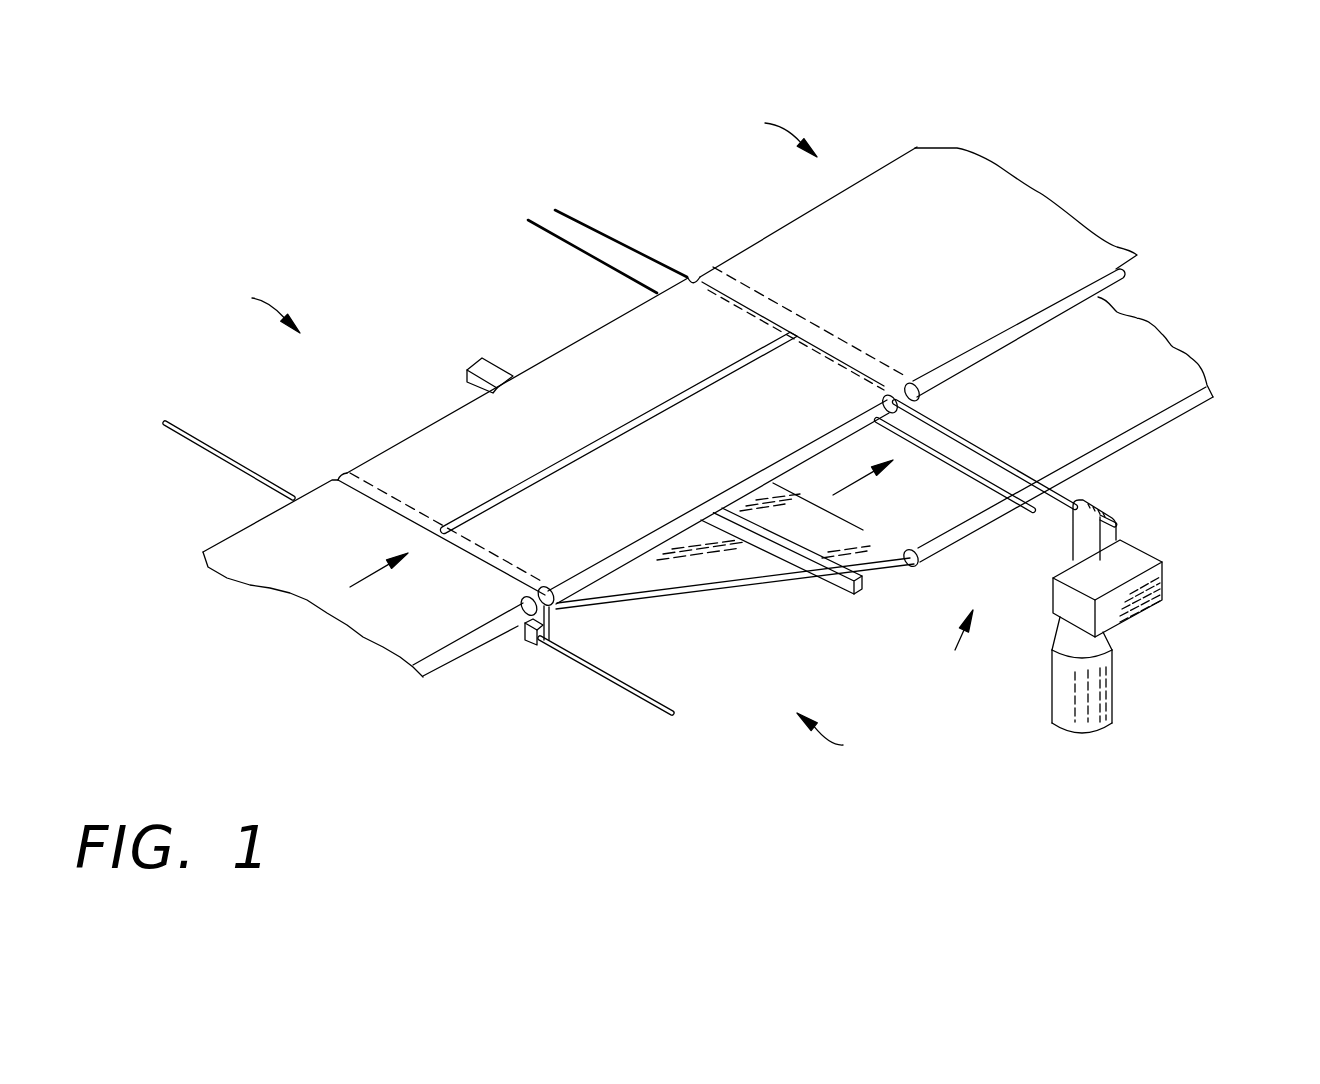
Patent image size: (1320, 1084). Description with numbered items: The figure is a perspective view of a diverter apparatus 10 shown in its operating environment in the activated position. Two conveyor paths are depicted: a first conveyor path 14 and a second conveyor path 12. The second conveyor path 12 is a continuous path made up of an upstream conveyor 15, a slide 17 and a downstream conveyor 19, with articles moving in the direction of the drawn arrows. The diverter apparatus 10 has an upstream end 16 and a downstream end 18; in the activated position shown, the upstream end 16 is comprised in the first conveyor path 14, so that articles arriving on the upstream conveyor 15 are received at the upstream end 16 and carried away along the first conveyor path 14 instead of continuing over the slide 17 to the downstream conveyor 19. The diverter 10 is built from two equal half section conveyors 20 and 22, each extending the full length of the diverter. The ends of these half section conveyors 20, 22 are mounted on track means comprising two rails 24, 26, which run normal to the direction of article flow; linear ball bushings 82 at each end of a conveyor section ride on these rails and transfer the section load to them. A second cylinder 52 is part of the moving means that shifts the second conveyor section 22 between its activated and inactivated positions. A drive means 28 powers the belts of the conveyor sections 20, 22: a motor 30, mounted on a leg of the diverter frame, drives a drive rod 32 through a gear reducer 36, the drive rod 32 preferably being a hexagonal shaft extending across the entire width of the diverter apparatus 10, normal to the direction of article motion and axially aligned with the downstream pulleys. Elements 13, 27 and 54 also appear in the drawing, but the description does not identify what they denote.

The diverter apparatus 10 is at (257, 310).
The second conveyor path 12 is at (836, 739).
The belt edge 13 is at (743, 267).
The first conveyor path 14 is at (934, 189).
The upstream conveyor 15 is at (240, 548).
The upstream end 16 is at (360, 467).
The slide 17 is at (694, 570).
The downstream end 18 is at (688, 290).
The downstream conveyor 19 is at (1145, 395).
The half section conveyor 20 is at (402, 437).
The half section conveyor 22 is at (600, 578).
The rail 24 is at (638, 700).
The rail 26 is at (577, 257).
The guide rail 27 is at (323, 507).
The drive means 28 is at (953, 649).
The motor 30 is at (1050, 693).
The drive rod 32 is at (1077, 495).
The gear reducer 36 is at (1053, 595).
The second cylinder 52 is at (470, 367).
The cross bar 54 is at (817, 593).
The linear ball bushings 82 is at (533, 640).